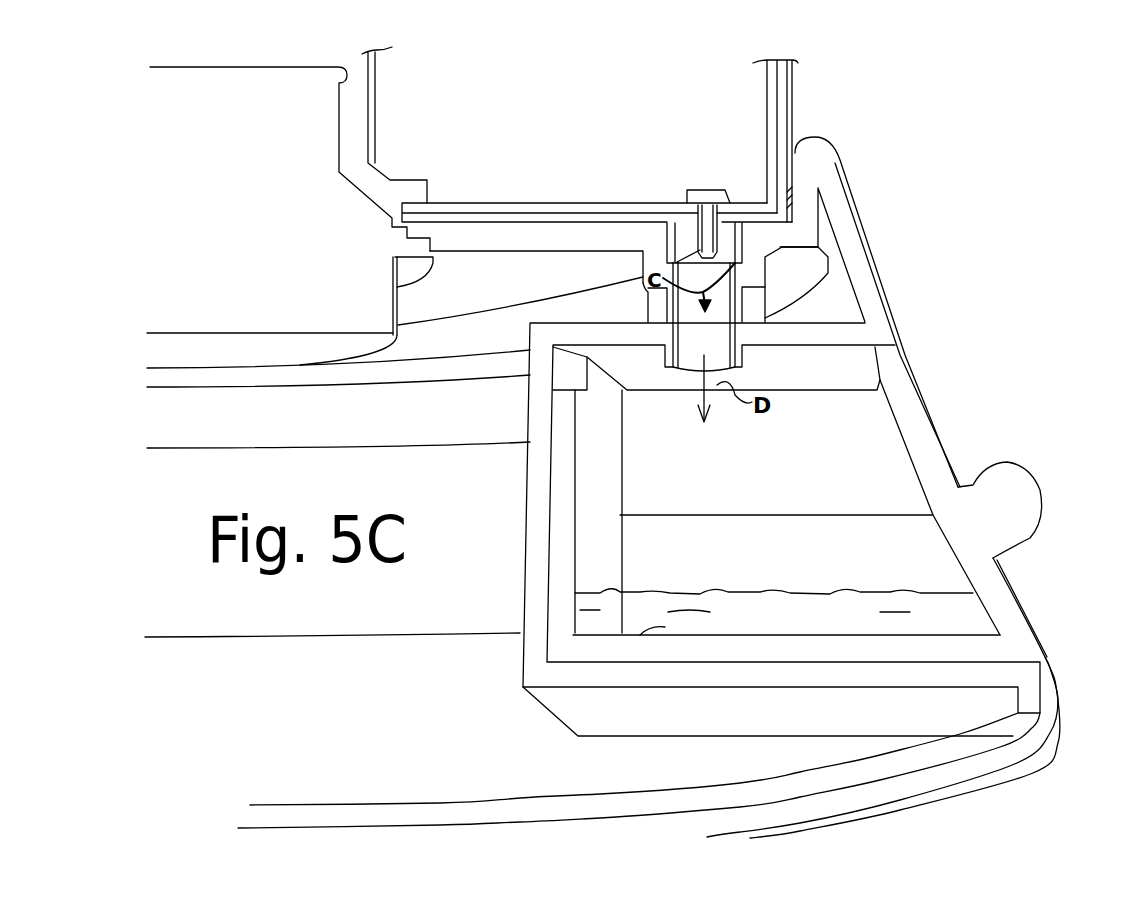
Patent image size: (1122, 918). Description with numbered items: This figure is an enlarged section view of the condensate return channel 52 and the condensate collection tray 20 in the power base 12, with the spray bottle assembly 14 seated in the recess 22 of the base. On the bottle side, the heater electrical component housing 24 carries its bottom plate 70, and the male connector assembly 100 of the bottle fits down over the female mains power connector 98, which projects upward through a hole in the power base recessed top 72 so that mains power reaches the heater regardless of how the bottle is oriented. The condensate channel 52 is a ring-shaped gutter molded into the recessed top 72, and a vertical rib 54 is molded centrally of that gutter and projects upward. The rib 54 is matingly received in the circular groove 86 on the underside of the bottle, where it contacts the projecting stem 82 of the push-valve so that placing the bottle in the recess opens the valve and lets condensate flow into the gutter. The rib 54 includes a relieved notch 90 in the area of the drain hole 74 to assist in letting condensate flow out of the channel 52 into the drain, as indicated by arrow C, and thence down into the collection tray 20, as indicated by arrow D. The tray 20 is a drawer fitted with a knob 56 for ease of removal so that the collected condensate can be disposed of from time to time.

The power base 12 is at (880, 278).
The spray bottle assembly 14 is at (838, 62).
The condensate collection tray 20 is at (920, 428).
The recess 22 is at (792, 150).
The heater electrical component housing 24 is at (788, 98).
The condensate channel 52 is at (690, 243).
The vertical rib 54 is at (712, 245).
The knob 56 is at (1012, 498).
The base of the heater electrical component housing 70 is at (460, 203).
The power base recessed top 72 is at (490, 235).
The drain hole 74 is at (715, 350).
The stem 82 is at (733, 613).
The circular groove 86 is at (697, 205).
The relieved notch 90 is at (712, 260).
The female mains power connector 98 is at (248, 199).
The male connector assembly 100 is at (350, 124).